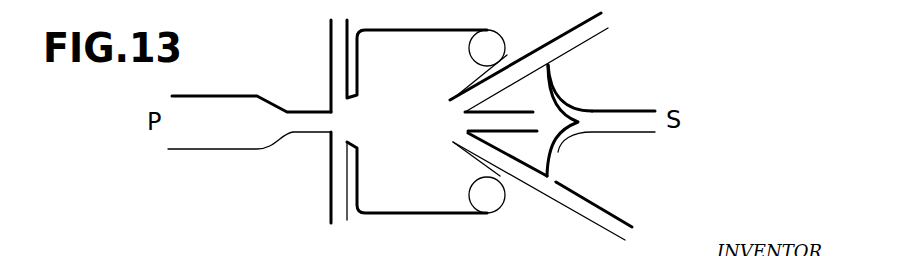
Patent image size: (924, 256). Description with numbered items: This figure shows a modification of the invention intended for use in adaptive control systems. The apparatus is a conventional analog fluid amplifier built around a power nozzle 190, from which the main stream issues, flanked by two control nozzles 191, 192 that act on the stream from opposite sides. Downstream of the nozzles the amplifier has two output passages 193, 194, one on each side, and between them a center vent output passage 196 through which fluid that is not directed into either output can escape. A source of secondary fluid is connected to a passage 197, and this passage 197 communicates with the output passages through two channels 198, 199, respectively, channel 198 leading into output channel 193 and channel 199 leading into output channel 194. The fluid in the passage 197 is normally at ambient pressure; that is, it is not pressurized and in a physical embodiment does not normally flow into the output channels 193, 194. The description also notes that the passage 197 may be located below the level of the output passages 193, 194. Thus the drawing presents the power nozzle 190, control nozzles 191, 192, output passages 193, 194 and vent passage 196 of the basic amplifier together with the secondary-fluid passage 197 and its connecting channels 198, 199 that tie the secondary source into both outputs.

The power nozzle 190 is at (306, 123).
The control nozzle 191 is at (338, 57).
The control nozzle 192 is at (341, 187).
The output passage 193 is at (522, 63).
The output passage 194 is at (553, 187).
The center vent output passage 196 is at (505, 120).
The passage 197 is at (620, 120).
The channel 198 is at (552, 70).
The channel 199 is at (558, 152).